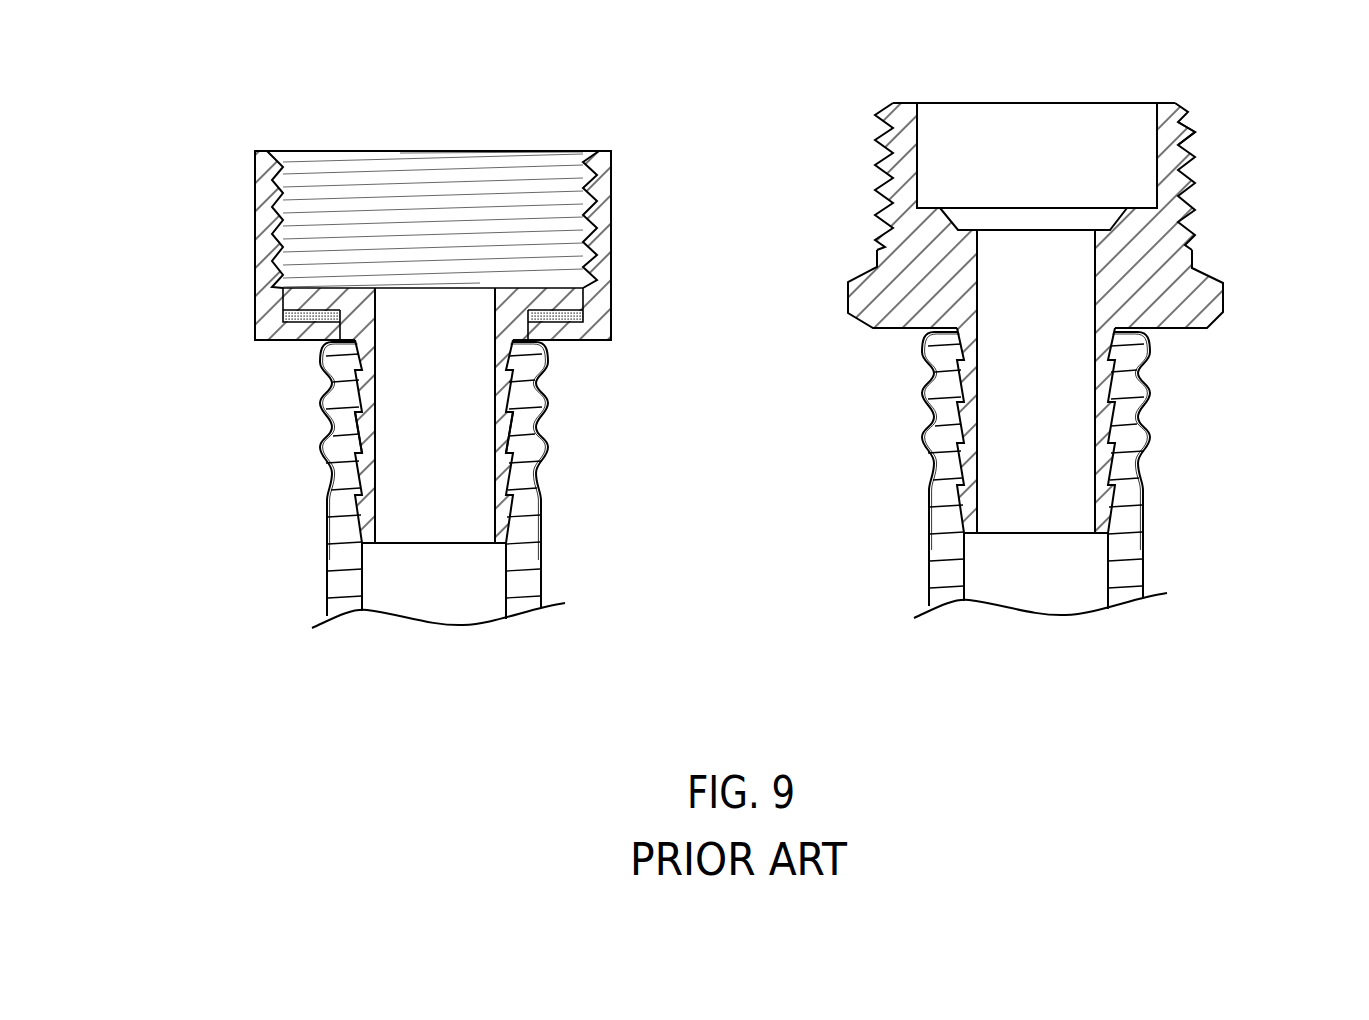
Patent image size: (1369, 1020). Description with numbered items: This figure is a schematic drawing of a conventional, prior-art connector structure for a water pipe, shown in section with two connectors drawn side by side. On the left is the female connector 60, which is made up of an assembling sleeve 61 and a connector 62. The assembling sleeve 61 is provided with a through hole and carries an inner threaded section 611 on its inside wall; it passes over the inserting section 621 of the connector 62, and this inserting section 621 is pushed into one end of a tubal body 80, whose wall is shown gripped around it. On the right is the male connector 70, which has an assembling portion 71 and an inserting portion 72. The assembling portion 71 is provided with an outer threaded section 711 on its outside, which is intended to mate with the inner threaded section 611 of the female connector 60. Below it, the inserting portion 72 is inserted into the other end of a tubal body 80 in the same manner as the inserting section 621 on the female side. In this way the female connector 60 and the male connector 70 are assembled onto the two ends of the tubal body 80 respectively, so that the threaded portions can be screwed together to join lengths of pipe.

The female connector 60 is at (364, 293).
The assembling sleeve 61 is at (358, 166).
The inner threaded section 611 is at (340, 195).
The connector 62 is at (358, 328).
The inserting section 621 is at (360, 457).
The male connector 70 is at (1099, 298).
The assembling portion 71 is at (1177, 155).
The outer threaded section 711 is at (1193, 132).
The inserting portion 72 is at (1100, 417).
The tubal body 80 is at (556, 578).